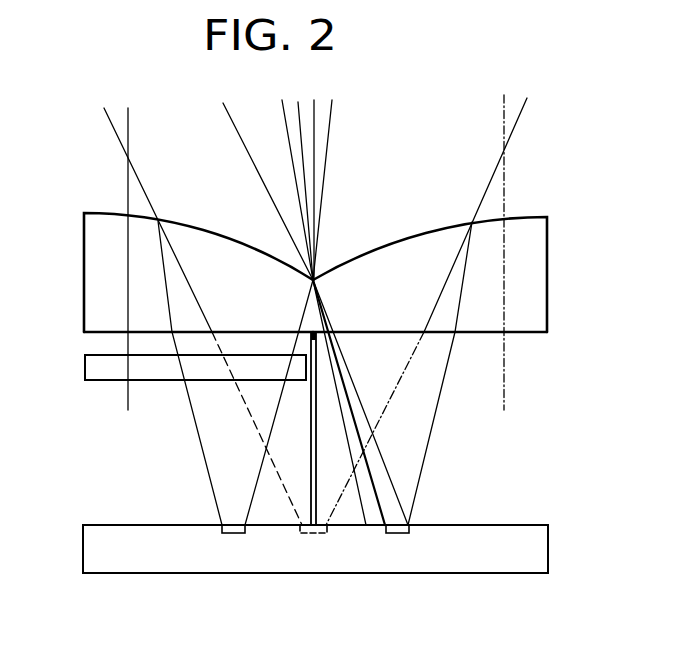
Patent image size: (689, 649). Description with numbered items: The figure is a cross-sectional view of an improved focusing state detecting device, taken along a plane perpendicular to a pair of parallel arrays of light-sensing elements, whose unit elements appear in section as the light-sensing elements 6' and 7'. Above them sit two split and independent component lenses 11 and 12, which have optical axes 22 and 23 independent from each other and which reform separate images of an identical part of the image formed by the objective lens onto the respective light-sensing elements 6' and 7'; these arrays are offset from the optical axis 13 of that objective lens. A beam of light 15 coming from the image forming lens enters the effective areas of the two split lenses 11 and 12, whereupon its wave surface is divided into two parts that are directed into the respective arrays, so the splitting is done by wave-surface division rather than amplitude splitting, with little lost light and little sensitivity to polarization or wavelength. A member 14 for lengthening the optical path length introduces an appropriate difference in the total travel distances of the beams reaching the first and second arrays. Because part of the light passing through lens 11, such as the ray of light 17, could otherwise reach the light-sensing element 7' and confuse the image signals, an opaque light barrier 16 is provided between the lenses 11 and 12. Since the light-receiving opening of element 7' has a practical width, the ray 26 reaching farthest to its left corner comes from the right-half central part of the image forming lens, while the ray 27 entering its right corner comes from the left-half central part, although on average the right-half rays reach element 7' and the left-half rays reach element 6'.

The split lens 11 is at (82, 282).
The split lens 12 is at (548, 225).
The optical axis of the objective lens 13 is at (316, 112).
The member for lengthening the optical path length 14 is at (112, 381).
The beam of light 15 is at (116, 133).
The light barrier 16 is at (310, 445).
The ray of light 17 is at (261, 176).
The optical axis 22 is at (129, 142).
The optical axis 23 is at (505, 180).
The ray of light 26 is at (327, 163).
The ray of light 27 is at (283, 117).
The light-sensing element 6' is at (233, 574).
The light-sensing element 7' is at (398, 574).